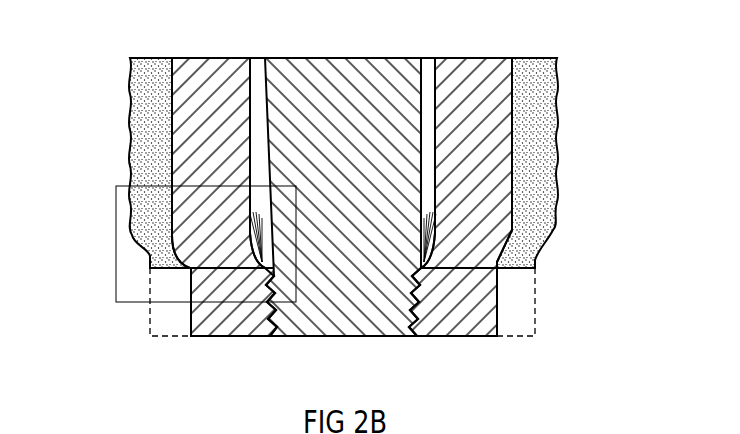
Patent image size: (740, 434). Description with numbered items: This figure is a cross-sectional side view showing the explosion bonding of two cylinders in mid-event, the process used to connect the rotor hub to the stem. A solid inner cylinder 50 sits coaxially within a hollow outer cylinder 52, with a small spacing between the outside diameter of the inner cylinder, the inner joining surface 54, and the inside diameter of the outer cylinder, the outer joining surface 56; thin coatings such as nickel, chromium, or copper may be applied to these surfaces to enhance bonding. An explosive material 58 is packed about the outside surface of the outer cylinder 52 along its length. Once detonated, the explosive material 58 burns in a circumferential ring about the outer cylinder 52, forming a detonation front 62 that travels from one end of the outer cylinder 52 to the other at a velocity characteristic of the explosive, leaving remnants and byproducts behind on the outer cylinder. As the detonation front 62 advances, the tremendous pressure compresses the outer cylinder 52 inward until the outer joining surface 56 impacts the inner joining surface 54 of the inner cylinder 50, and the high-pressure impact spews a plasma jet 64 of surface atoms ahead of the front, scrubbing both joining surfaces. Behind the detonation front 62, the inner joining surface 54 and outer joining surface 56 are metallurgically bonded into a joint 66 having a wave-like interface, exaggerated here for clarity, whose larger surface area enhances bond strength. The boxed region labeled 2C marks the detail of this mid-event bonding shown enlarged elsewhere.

The solid inner cylinder 50 is at (372, 57).
The hollow outer cylinder 52 is at (208, 57).
The inner joining surface 54 is at (433, 83).
The outer joining surface 56 is at (473, 57).
The explosive material 58 is at (130, 106).
The detonation front 62 is at (457, 268).
The plasma jet 64 is at (440, 244).
The joint 66 is at (268, 292).
The detail view indicator 2C is at (116, 302).